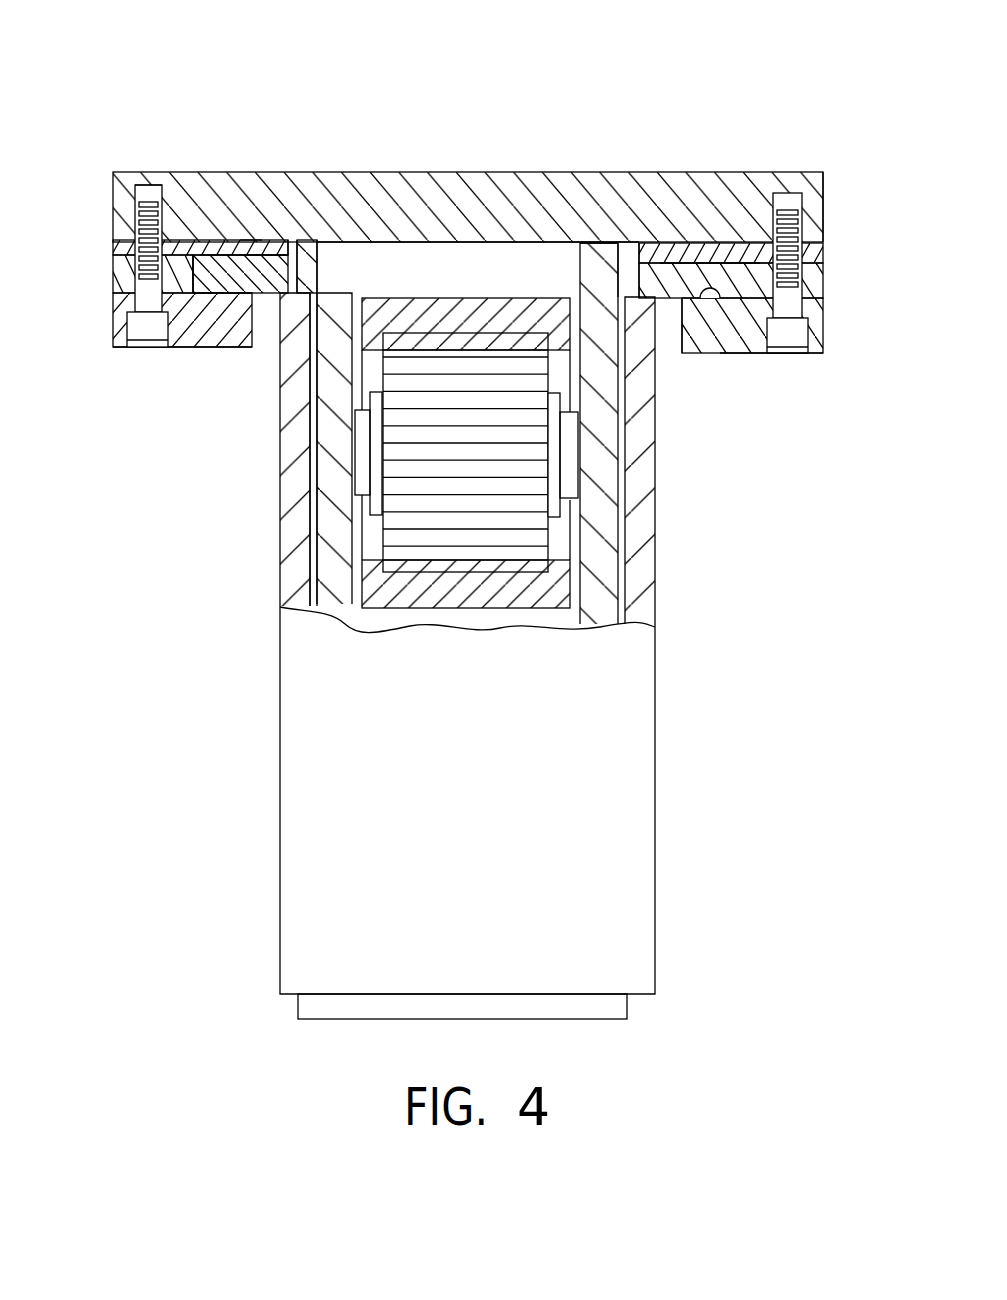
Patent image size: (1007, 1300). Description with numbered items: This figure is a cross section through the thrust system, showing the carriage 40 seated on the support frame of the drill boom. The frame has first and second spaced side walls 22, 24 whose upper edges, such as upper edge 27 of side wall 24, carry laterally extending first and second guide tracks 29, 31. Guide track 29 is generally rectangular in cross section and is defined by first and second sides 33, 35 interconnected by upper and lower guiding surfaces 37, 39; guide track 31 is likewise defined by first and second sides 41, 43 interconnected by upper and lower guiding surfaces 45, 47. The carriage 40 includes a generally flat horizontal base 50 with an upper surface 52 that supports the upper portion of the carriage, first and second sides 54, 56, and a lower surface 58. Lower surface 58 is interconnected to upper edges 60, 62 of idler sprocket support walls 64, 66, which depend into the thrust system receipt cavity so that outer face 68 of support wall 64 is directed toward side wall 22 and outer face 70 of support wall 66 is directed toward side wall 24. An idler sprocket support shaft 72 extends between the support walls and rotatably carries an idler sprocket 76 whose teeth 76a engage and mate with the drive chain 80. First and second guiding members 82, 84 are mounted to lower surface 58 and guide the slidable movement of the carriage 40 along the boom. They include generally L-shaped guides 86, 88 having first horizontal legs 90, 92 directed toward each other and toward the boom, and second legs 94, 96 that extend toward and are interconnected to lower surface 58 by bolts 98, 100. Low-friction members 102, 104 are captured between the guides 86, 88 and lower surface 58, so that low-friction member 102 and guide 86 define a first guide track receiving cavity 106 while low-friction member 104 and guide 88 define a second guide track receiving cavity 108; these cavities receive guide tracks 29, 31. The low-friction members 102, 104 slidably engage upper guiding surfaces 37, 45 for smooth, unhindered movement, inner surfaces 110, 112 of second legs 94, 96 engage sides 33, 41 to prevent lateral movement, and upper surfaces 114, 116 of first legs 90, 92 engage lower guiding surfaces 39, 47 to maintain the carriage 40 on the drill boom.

The first side wall 22 is at (648, 600).
The second side wall 24 is at (288, 548).
The upper edge of side wall 24 27 is at (636, 250).
The first guide track 29 is at (247, 243).
The second guide track 31 is at (302, 284).
The first side of guide track 29 33 is at (760, 268).
The second side of guide track 29 35 is at (650, 268).
The upper guiding surface of guide track 29 37 is at (672, 270).
The lower guiding surface of guide track 29 39 is at (690, 298).
The carriage 40 is at (659, 835).
The first side of guide track 31 41 is at (245, 292).
The second side of guide track 31 43 is at (312, 245).
The upper guiding surface of guide track 31 45 is at (232, 258).
The lower guiding surface of guide track 31 47 is at (205, 280).
The horizontal base 50 is at (222, 262).
The upper surface of horizontal base 52 is at (488, 172).
The first side of horizontal base 54 is at (823, 180).
The second side of horizontal base 56 is at (113, 192).
The lower surface of horizontal base 58 is at (497, 243).
The upper edge of idler sprocket support wall 64 60 is at (593, 242).
The upper edge of idler sprocket support wall 66 62 is at (305, 242).
The idler sprocket support wall 64 is at (605, 482).
The idler sprocket support wall 66 is at (315, 500).
The outer face of idler sprocket support wall 64 68 is at (652, 630).
The outer face of idler sprocket support wall 66 70 is at (313, 602).
The first idler sprocket support shaft 72 is at (570, 482).
The idler sprocket 76 is at (382, 542).
The teeth 76a is at (437, 572).
The drive chain 80 is at (505, 600).
The first guiding member 82 is at (767, 353).
The second guiding member 84 is at (115, 349).
The L-shaped guide 86 is at (820, 353).
The L-shaped guide 88 is at (128, 330).
The first horizontal leg of guide 86 90 is at (713, 345).
The first horizontal leg of guide 88 92 is at (165, 345).
The second leg of guide 86 94 is at (815, 292).
The second leg of guide 88 96 is at (122, 280).
The bolt 98 is at (790, 195).
The bolt 100 is at (135, 192).
The low-friction member 102 is at (815, 258).
The low-friction member 104 is at (130, 247).
The first guide track receiving cavity 106 is at (767, 321).
The second guide track receiving cavity 108 is at (240, 268).
The inner surface of second leg 94 110 is at (700, 268).
The inner surface of second leg 96 112 is at (212, 256).
The upper surface of first leg 90 114 is at (720, 298).
The upper surface of first leg 92 116 is at (250, 243).